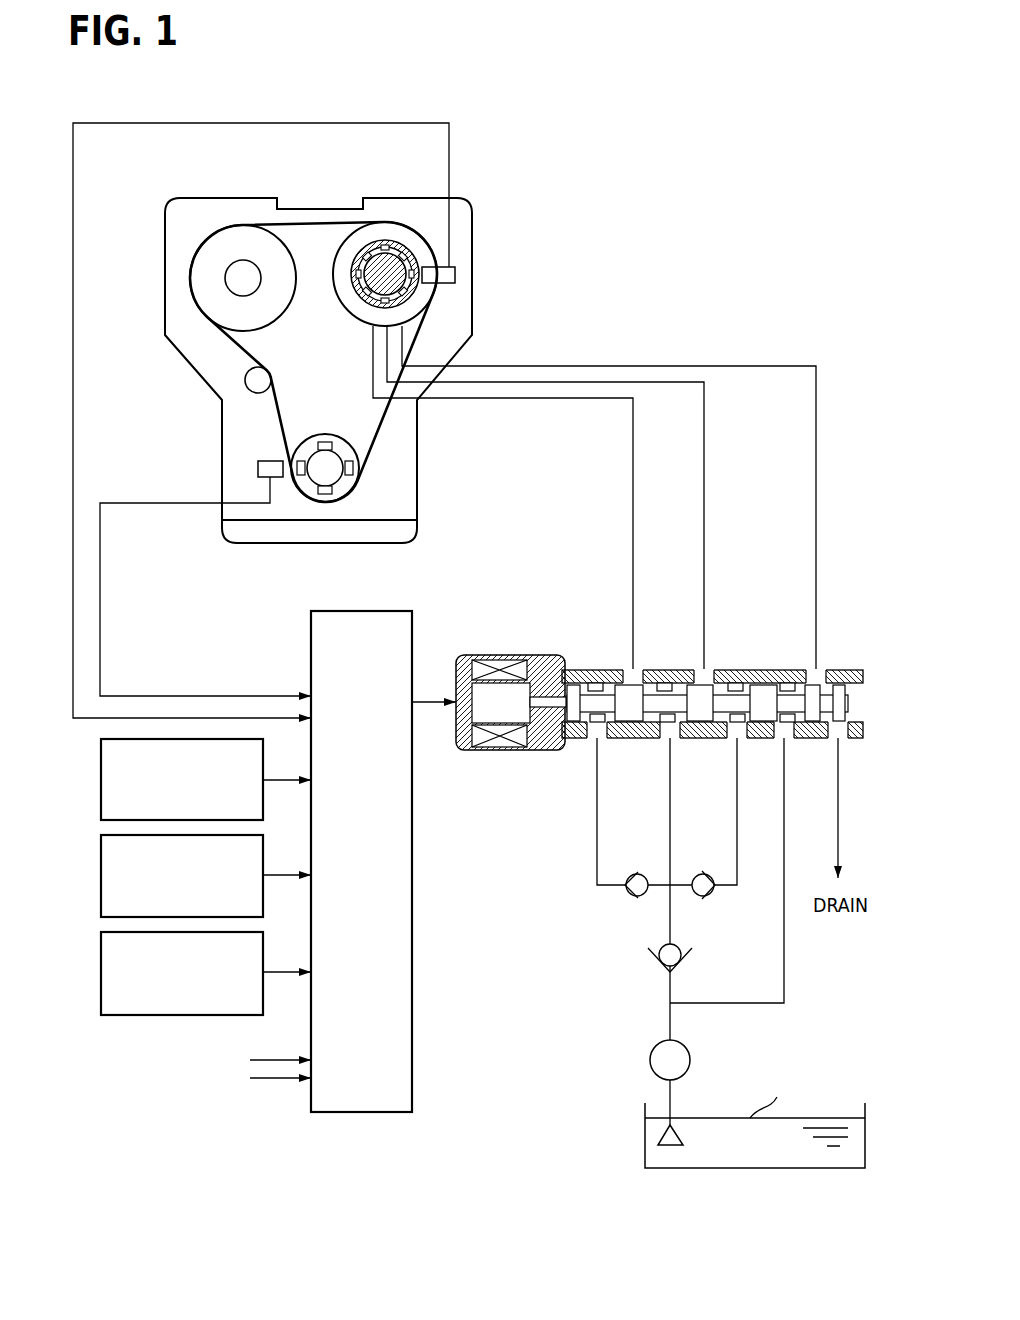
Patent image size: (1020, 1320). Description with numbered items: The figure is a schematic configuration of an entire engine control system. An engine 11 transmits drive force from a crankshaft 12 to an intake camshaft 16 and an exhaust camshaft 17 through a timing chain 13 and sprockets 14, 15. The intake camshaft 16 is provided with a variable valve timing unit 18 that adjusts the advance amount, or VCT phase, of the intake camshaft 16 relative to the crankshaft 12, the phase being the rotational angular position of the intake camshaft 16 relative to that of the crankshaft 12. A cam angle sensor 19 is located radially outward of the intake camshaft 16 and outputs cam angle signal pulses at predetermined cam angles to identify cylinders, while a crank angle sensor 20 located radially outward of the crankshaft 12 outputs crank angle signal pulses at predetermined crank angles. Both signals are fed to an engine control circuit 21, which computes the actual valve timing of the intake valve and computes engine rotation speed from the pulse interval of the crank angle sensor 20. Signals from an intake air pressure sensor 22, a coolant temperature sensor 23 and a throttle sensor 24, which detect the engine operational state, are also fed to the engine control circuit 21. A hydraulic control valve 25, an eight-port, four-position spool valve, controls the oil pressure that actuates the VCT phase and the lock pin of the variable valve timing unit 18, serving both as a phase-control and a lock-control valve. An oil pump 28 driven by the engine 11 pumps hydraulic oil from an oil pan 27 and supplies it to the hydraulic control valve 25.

The engine 11 is at (315, 205).
The crankshaft 12 is at (333, 477).
The timing chain 13 is at (377, 438).
The sprocket 14 is at (395, 232).
The sprocket 15 is at (217, 253).
The intake camshaft 16 is at (382, 272).
The exhaust camshaft 17 is at (242, 280).
The variable valve timing unit 18 is at (405, 250).
The cam angle sensor 19 is at (457, 273).
The crank angle sensor 20 is at (257, 467).
The engine control circuit 21 is at (347, 1112).
The intake air pressure sensor 22 is at (101, 778).
The coolant temperature sensor 23 is at (101, 872).
The throttle sensor 24 is at (101, 970).
The hydraulic control valve 25 is at (833, 668).
The oil pan 27 is at (645, 1138).
The oil pump 28 is at (650, 1060).